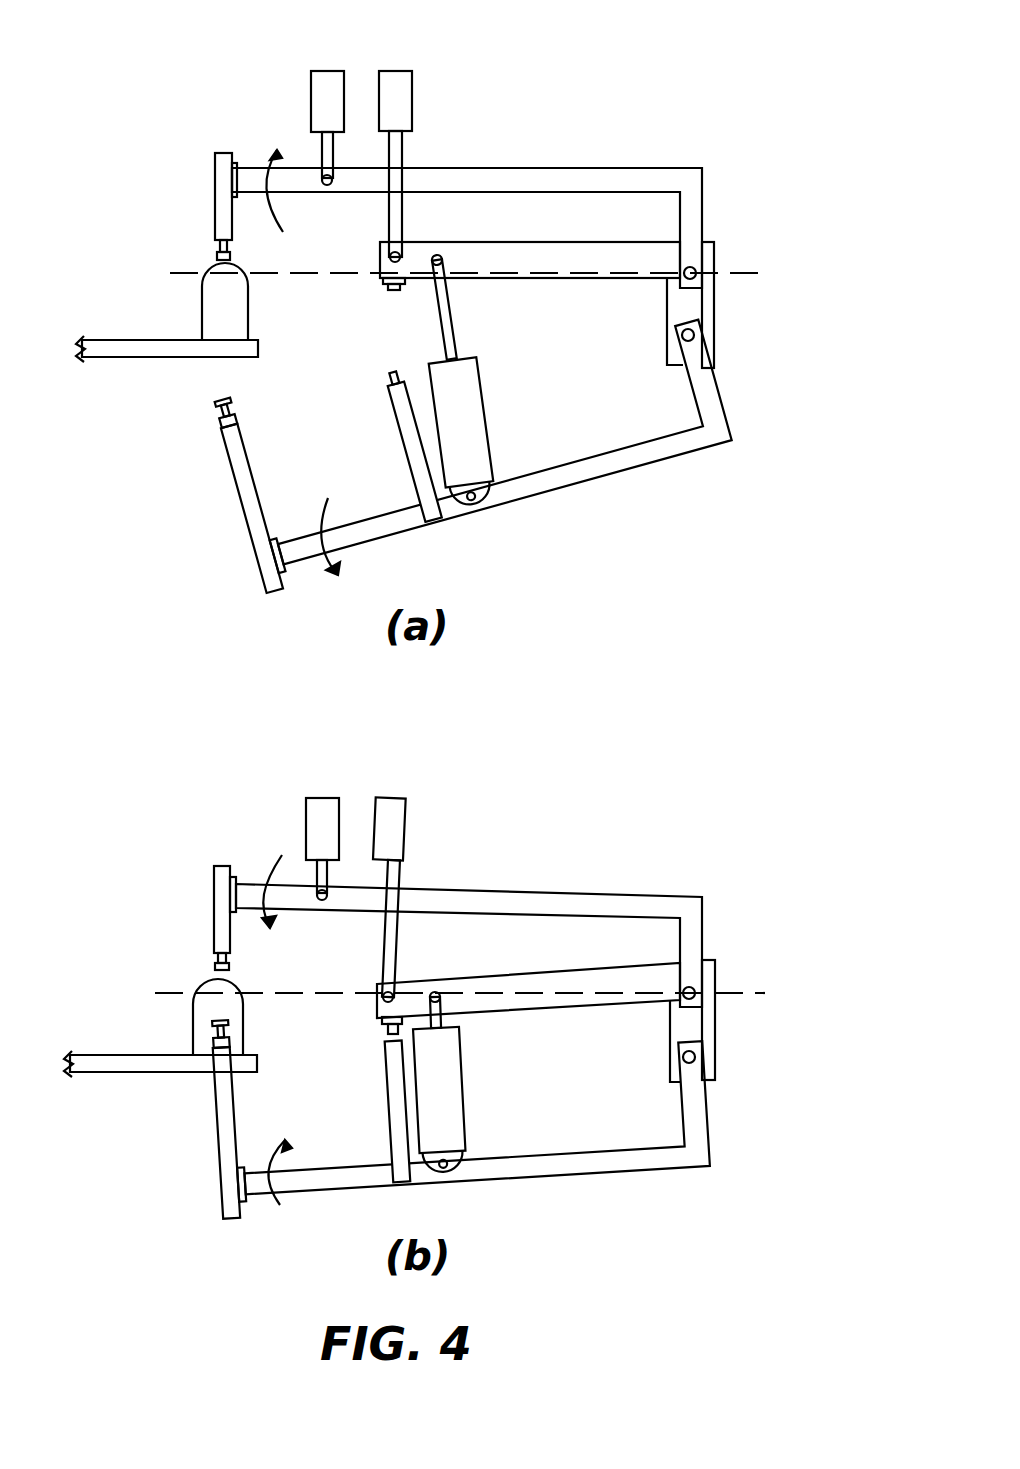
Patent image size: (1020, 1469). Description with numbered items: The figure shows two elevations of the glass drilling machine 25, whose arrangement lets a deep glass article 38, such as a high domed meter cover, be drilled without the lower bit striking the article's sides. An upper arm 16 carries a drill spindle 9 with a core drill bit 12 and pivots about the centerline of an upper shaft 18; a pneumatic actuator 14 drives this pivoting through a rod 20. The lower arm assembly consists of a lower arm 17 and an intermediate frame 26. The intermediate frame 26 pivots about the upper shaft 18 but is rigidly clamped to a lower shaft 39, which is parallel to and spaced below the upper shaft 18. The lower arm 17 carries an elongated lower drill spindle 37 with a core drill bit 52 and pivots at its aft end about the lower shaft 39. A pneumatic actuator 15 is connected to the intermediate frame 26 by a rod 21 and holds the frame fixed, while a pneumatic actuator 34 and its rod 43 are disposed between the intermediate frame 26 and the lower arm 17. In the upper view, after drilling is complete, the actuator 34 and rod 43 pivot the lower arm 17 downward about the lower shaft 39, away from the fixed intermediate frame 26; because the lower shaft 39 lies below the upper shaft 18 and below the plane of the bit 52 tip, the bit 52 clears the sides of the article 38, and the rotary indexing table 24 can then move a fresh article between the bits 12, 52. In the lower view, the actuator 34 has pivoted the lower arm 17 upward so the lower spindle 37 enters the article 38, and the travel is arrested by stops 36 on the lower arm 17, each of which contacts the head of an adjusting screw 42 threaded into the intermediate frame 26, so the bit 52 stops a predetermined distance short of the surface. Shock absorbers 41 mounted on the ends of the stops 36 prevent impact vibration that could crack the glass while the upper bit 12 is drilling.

The drill spindle 9 is at (214, 190).
The core drill bit 12 is at (216, 256).
The pneumatic actuator 14 is at (330, 70).
The pneumatic actuator 15 is at (403, 70).
The upper arm 16 is at (585, 167).
The lower arm 17 is at (597, 482).
The upper shaft 18 is at (697, 269).
The rod 20 is at (330, 176).
The rod 21 is at (402, 158).
The rotary indexing table 24 is at (122, 358).
The drilling machine 25 is at (690, 108).
The intermediate frame 26 is at (545, 242).
The pneumatic actuator 34 is at (480, 398).
The stop 36 is at (404, 455).
The lower drill spindle 37 is at (244, 517).
The glass article 38 is at (202, 306).
The lower shaft 39 is at (702, 340).
The shock absorber 41 is at (388, 381).
The adjusting screw 42 is at (388, 291).
The rod 43 is at (448, 304).
The core drill bit 52 is at (218, 412).